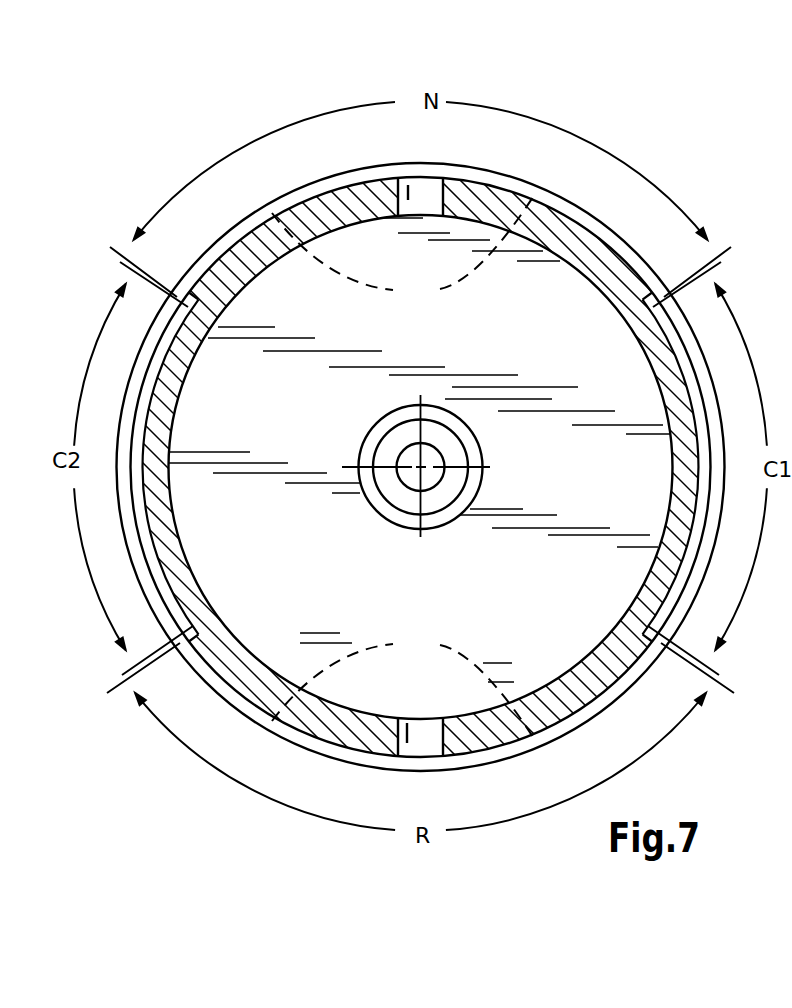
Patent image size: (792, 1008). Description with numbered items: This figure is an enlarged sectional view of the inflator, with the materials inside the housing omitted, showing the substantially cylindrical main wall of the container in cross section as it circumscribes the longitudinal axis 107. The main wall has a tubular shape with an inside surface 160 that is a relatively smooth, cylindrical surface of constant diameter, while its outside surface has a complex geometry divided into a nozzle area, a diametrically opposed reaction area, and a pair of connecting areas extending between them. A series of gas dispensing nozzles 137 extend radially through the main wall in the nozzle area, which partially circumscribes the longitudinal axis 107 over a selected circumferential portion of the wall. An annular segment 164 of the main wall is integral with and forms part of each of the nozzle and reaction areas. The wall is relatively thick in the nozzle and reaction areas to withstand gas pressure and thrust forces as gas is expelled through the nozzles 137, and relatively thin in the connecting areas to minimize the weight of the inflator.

The longitudinal axis 107 is at (422, 467).
The gas dispensing nozzles 137 is at (418, 186).
The inside surface 160 is at (185, 557).
The annular segment 164 is at (165, 340).